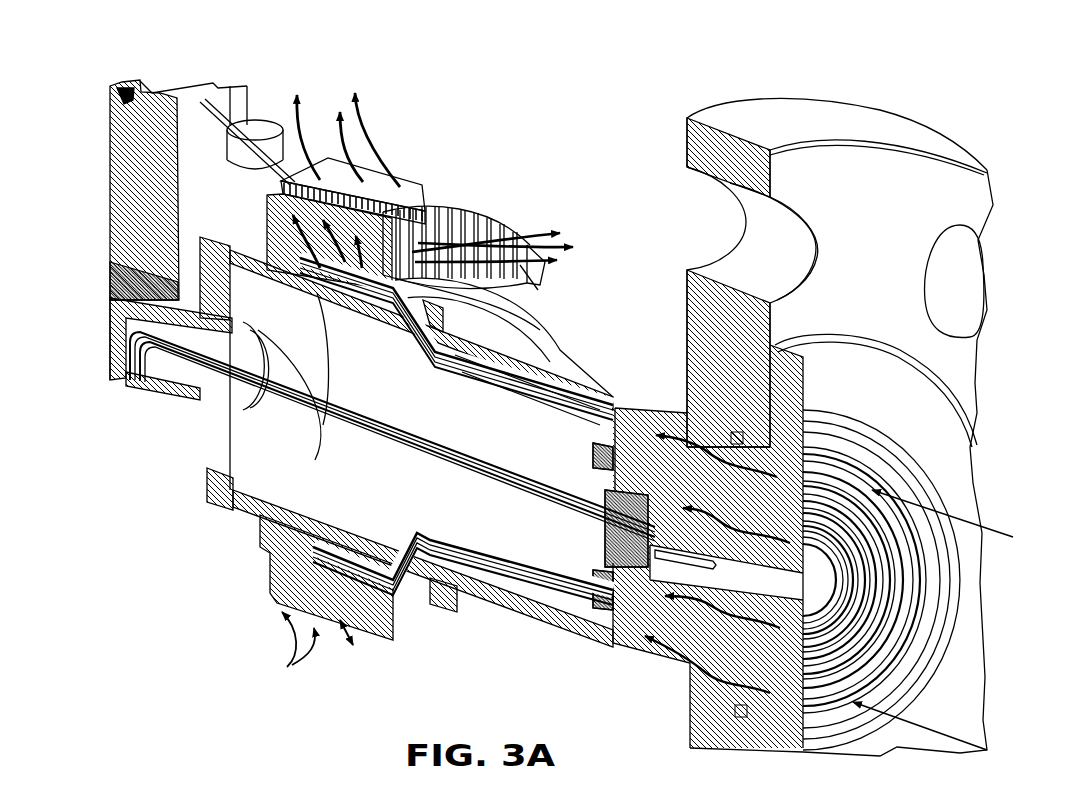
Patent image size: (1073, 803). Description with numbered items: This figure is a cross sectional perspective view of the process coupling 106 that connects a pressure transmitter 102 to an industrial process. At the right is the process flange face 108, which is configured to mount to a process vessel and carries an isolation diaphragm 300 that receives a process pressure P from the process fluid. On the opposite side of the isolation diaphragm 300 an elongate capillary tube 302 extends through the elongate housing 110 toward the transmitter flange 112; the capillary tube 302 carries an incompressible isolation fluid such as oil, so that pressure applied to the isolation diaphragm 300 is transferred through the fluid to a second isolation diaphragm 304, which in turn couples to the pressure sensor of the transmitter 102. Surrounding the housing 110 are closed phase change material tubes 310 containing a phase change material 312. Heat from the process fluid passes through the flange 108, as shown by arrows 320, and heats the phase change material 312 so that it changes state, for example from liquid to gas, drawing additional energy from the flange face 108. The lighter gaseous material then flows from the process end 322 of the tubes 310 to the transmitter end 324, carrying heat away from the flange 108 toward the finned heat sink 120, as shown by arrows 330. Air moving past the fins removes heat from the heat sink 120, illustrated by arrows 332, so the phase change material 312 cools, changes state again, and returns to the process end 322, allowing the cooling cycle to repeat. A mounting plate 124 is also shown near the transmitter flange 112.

The pressure transmitter 102 is at (172, 108).
The process coupling 106 is at (243, 703).
The process flange face 108 is at (815, 118).
The elongate housing 110 is at (557, 355).
The transmitter flange 112 is at (400, 178).
The heat sink 120 is at (455, 205).
The mounting plate 124 is at (228, 100).
The isolation diaphragm 300 is at (878, 452).
The capillary tube 302 is at (323, 430).
The second isolation diaphragm 304 is at (118, 264).
The phase change material tubes 310 is at (463, 463).
The phase change material 312 is at (521, 490).
The arrows indicating heat from process fluid 320 is at (672, 648).
The process end of tubes 322 is at (613, 390).
The transmitter end of tubes 324 is at (384, 333).
The arrows indicating heat drawn toward heat sink 330 is at (283, 292).
The arrows indicating heat drawn from heat sink 332 is at (520, 250).
The process pressure P is at (940, 628).